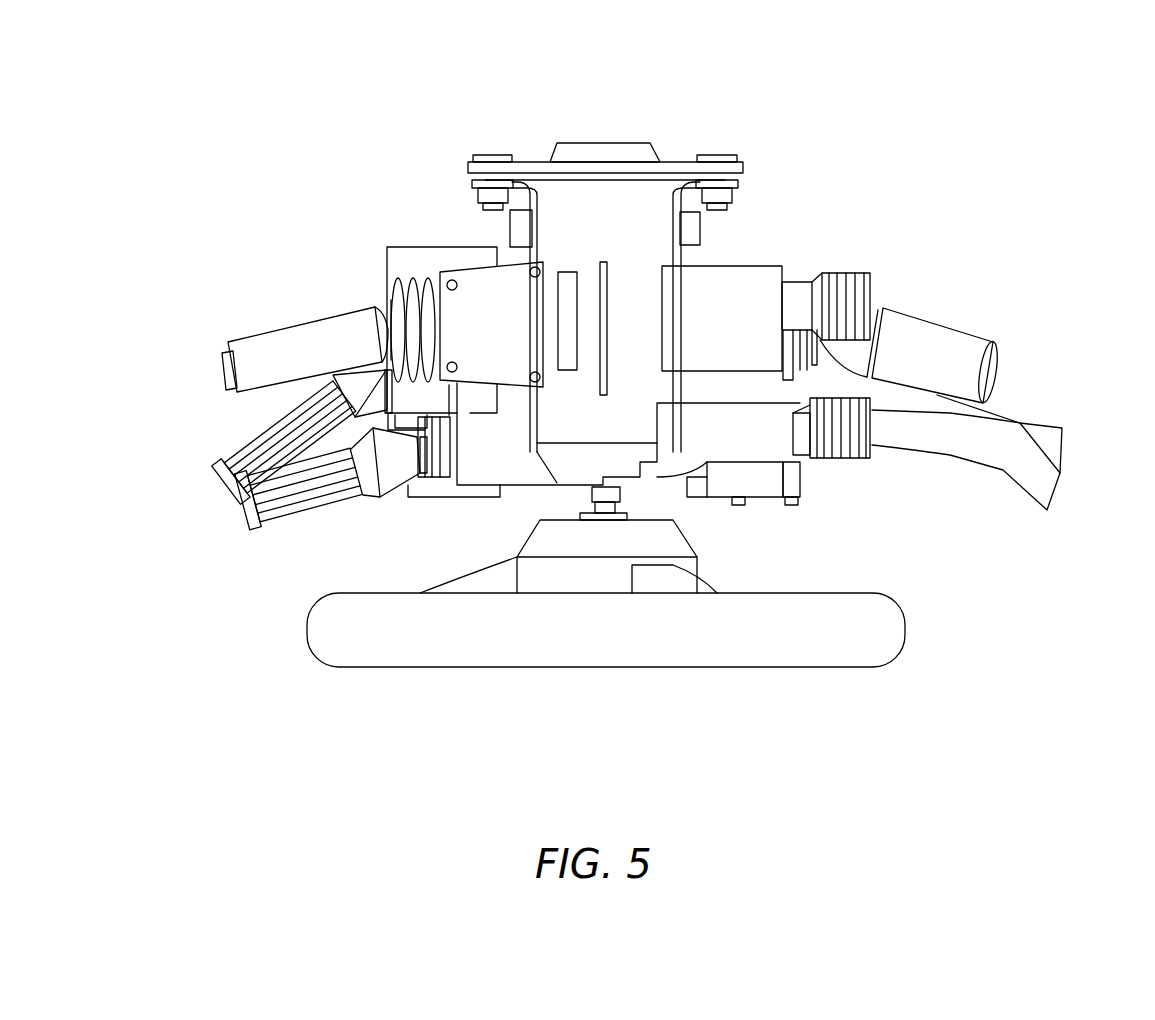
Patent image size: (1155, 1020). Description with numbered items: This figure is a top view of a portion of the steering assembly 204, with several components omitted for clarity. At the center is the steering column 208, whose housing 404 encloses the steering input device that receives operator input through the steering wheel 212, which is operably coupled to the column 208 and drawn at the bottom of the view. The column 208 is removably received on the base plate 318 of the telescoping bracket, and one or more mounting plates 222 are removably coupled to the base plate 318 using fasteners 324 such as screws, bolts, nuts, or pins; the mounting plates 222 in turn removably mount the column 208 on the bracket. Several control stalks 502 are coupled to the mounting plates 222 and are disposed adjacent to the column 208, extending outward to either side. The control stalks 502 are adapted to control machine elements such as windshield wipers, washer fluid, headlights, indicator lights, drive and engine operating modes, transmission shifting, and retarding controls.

The steering assembly 204 is at (996, 157).
The base plate 318 is at (528, 160).
The fasteners 324 is at (488, 155).
The housing 404 is at (590, 215).
The steering column 208 is at (628, 222).
The mounting plates 222 is at (530, 230).
The steering wheel 212 is at (634, 645).
The control stalks 502 is at (247, 430).